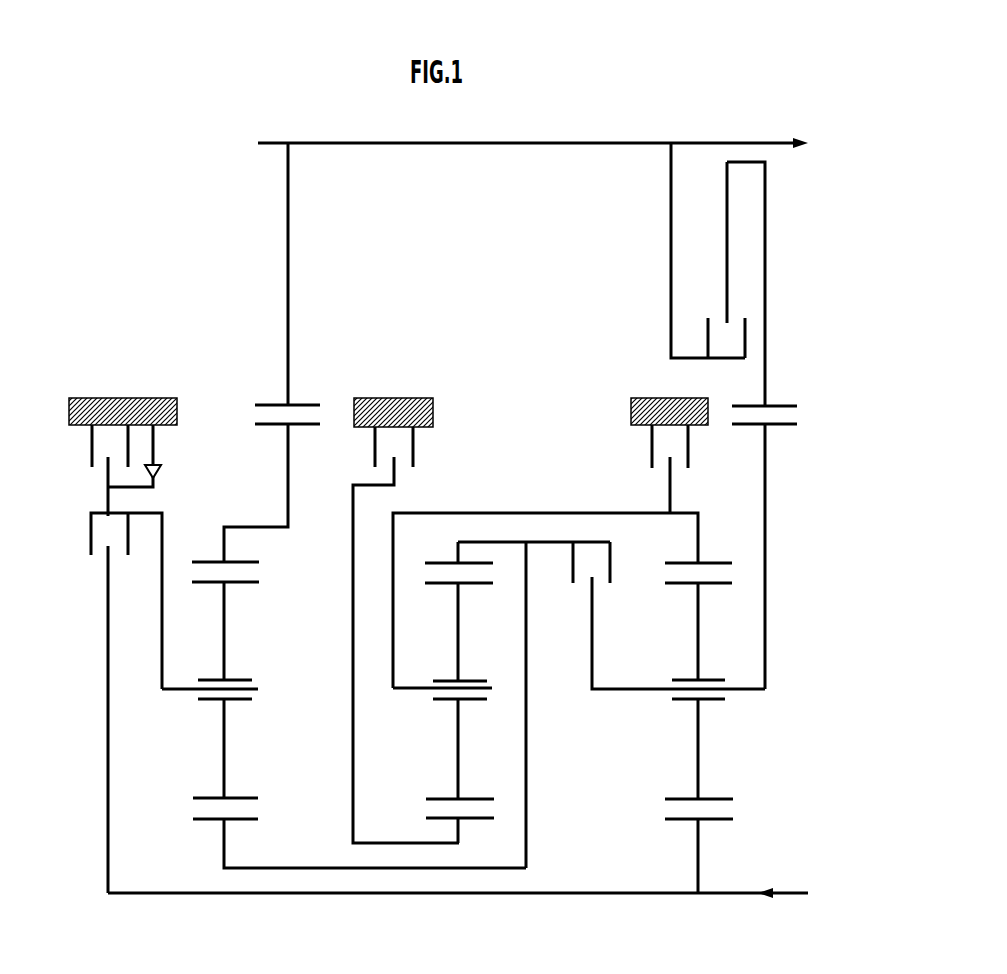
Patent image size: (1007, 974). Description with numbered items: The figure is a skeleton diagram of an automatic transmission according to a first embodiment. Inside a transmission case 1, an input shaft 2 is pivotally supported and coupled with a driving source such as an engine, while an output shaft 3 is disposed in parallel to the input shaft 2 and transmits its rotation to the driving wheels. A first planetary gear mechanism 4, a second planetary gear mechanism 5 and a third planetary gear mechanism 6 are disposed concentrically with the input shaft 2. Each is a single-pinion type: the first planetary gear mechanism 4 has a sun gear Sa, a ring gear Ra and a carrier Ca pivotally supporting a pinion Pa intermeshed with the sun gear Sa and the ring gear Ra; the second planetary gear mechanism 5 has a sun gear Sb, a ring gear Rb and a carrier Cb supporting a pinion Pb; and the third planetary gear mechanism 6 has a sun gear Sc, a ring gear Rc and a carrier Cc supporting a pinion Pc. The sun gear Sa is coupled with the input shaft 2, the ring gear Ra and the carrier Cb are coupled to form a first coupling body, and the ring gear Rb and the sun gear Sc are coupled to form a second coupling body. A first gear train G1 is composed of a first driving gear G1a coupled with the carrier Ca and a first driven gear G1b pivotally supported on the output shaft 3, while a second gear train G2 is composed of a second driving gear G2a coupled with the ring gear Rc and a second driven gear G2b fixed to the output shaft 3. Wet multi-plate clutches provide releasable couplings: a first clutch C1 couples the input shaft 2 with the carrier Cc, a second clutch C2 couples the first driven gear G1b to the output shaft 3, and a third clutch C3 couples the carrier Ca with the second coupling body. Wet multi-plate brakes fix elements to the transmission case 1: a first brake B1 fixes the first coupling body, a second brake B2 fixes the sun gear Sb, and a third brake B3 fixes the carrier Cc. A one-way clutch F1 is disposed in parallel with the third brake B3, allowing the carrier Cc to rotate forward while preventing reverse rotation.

The transmission case 1 is at (122, 398).
The input shaft 2 is at (714, 895).
The output shaft 3 is at (712, 143).
The first planetary gear mechanism 4 is at (720, 703).
The second planetary gear mechanism 5 is at (545, 654).
The third planetary gear mechanism 6 is at (344, 756).
The first gear train G1 is at (760, 416).
The first driving gear G1a is at (797, 424).
The first driven gear G1b is at (797, 406).
The second gear train G2 is at (279, 352).
The second driving gear G2a is at (321, 424).
The second driven gear G2b is at (262, 406).
The first brake B1 is at (670, 469).
The second brake B2 is at (406, 635).
The third brake B3 is at (122, 470).
The first clutch C1 is at (126, 703).
The second clutch C2 is at (726, 260).
The third clutch C3 is at (669, 615).
The 1-way clutch F1 is at (163, 472).
The ring gear Ra is at (730, 566).
The ring gear Rb is at (430, 563).
The ring gear Rc is at (259, 562).
The carrier Ca is at (634, 690).
The carrier Cb is at (416, 682).
The carrier Cc is at (179, 689).
The pinion Pa is at (665, 800).
The pinion Pb is at (428, 799).
The pinion Pc is at (193, 798).
The sun gear Sa is at (733, 818).
The sun gear Sb is at (488, 818).
The sun gear Sc is at (255, 819).